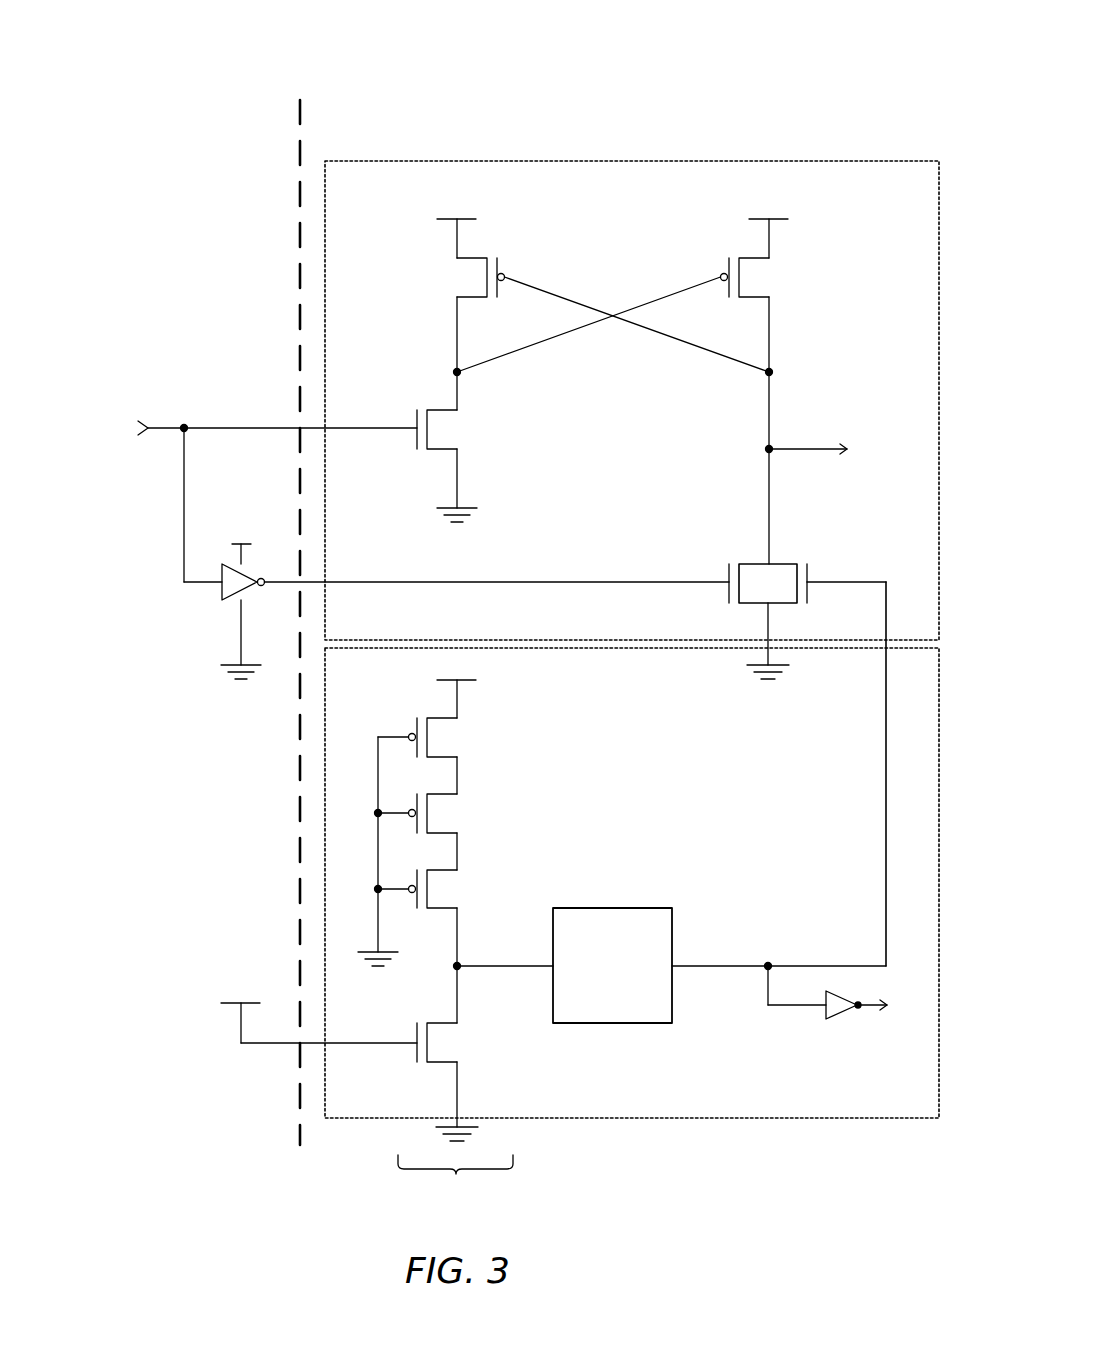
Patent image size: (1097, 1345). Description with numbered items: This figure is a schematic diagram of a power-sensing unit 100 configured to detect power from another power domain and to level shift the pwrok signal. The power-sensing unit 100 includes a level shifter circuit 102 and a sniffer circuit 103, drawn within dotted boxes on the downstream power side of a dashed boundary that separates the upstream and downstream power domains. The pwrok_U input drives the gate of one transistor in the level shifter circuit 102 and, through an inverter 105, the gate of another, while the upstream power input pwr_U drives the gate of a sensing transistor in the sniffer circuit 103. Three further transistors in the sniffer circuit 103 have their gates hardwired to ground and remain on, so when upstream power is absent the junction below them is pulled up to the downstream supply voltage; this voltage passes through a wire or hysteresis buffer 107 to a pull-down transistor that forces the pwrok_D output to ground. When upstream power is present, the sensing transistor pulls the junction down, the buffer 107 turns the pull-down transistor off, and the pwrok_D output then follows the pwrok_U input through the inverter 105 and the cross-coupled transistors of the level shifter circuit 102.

The power-sensing unit 100 is at (737, 72).
The level shifter circuit 102 is at (325, 252).
The sniffer circuit 103 is at (325, 795).
The inverter 105 is at (223, 597).
The wire or hysteresis buffer 107 is at (595, 1012).